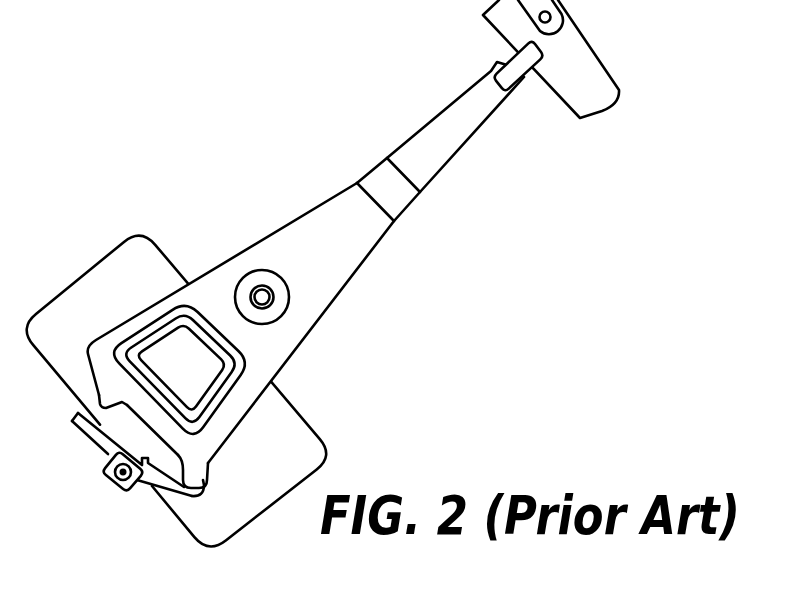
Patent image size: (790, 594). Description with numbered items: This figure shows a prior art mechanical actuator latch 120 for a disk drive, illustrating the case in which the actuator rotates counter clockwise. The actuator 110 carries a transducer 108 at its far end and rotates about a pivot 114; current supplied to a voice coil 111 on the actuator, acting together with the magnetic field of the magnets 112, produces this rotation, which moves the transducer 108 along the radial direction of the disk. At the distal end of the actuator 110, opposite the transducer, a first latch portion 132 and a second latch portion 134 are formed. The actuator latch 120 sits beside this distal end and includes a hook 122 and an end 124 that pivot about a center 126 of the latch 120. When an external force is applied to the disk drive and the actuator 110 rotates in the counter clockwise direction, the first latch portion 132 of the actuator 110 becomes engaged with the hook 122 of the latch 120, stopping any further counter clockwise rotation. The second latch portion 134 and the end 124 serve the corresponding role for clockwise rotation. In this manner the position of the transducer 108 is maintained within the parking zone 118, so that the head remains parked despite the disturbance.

The transducer 108 is at (528, 79).
The actuator 110 is at (306, 208).
The voice coil 111 is at (234, 398).
The magnets 112 is at (107, 258).
The pivot 114 is at (284, 272).
The parking zone 118 is at (588, 117).
The actuator latch 120 is at (111, 491).
The hook 122 is at (208, 493).
The end 124 is at (72, 424).
The center 126 is at (128, 489).
The first latch portion 132 is at (210, 470).
The second latch portion 134 is at (95, 391).